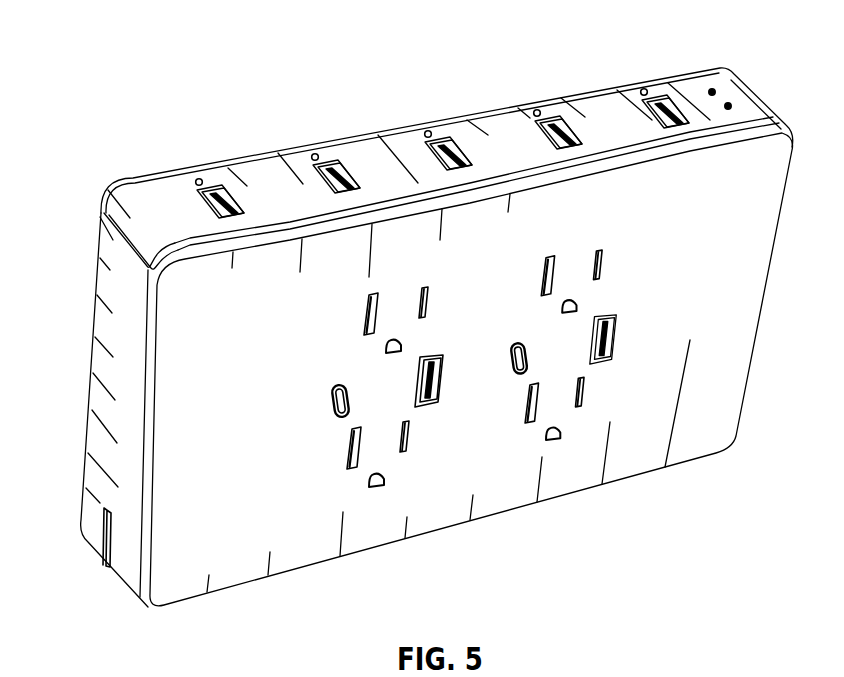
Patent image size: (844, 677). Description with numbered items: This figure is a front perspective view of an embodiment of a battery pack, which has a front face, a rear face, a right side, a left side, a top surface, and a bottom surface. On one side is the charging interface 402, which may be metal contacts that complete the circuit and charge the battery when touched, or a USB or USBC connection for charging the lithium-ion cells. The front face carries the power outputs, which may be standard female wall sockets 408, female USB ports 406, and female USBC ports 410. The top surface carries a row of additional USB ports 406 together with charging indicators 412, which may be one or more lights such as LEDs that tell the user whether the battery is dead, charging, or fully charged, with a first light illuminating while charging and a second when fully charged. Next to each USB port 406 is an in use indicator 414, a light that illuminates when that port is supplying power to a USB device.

The charging interface 402 is at (103, 541).
The female USB port 406 is at (452, 145).
The female wall socket 408 is at (575, 265).
The female USBC port 410 is at (519, 376).
The charging indicator 412 is at (710, 92).
The in use indicator 414 is at (425, 132).